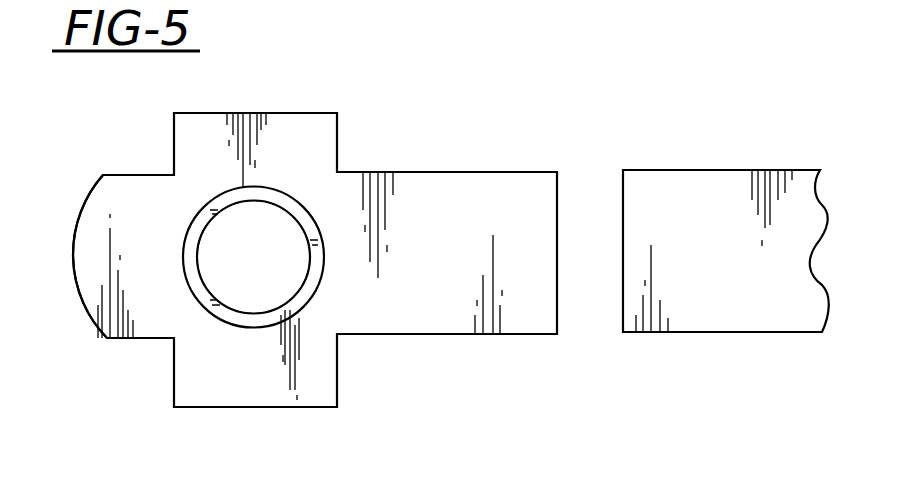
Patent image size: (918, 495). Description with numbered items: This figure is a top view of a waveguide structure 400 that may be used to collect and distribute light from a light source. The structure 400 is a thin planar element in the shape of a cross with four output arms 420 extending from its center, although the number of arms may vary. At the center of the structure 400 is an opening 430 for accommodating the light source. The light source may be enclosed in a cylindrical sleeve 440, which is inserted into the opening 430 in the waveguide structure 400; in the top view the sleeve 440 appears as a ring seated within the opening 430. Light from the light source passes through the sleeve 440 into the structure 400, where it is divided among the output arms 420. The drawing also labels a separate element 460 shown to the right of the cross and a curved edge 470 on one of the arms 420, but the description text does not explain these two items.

The waveguide structure 400 is at (428, 155).
The output arms 420 is at (310, 122).
The opening 430 is at (255, 215).
The cylindrical sleeve 440 is at (295, 298).
The mating member 460 is at (688, 188).
The curved edge 470 is at (95, 218).